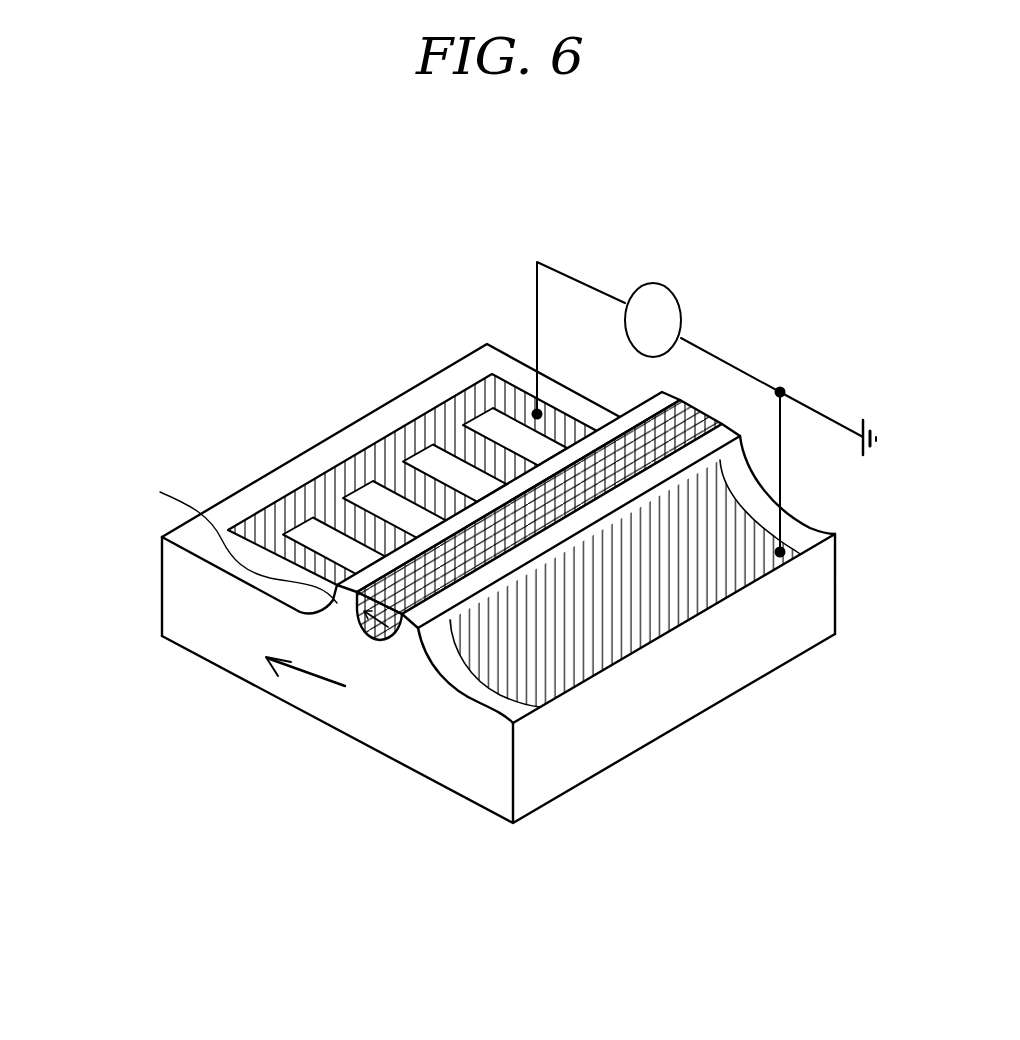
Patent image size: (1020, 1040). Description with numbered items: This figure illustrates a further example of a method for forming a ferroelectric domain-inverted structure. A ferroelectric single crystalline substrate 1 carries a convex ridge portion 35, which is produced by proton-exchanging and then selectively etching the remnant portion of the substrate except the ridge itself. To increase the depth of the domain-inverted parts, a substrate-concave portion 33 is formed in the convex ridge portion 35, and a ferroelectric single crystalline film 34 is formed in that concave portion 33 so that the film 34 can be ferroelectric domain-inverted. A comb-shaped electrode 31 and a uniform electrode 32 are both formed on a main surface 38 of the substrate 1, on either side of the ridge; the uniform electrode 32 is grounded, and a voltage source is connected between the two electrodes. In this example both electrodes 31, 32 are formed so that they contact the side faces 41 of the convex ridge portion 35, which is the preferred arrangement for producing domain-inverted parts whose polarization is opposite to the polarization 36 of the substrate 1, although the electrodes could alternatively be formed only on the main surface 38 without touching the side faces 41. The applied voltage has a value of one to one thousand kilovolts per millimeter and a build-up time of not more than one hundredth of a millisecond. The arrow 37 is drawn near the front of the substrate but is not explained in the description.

The ferroelectric single crystalline substrate 1 is at (178, 600).
The comb-shaped electrode 31 is at (475, 402).
The uniform electrode 32 is at (667, 570).
The substrate-concave portion 33 is at (386, 641).
The ferroelectric single crystalline film 34 is at (663, 428).
The convex ridge portion 35 is at (545, 540).
The polarization 36 is at (498, 728).
The direction arrow 37 is at (385, 641).
The main surface 38 is at (500, 360).
The side faces 41 is at (606, 798).